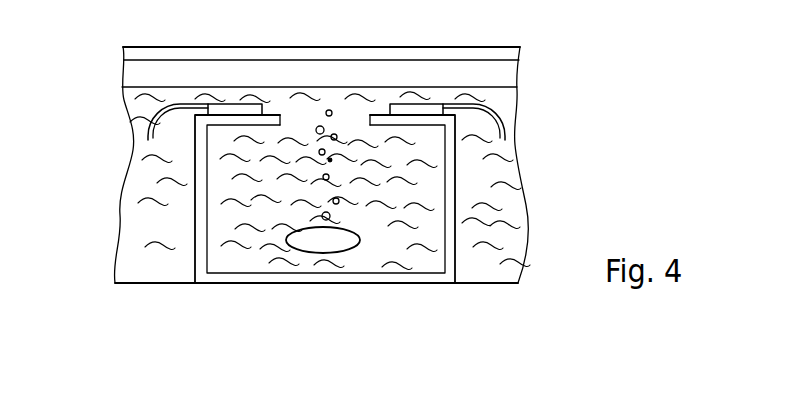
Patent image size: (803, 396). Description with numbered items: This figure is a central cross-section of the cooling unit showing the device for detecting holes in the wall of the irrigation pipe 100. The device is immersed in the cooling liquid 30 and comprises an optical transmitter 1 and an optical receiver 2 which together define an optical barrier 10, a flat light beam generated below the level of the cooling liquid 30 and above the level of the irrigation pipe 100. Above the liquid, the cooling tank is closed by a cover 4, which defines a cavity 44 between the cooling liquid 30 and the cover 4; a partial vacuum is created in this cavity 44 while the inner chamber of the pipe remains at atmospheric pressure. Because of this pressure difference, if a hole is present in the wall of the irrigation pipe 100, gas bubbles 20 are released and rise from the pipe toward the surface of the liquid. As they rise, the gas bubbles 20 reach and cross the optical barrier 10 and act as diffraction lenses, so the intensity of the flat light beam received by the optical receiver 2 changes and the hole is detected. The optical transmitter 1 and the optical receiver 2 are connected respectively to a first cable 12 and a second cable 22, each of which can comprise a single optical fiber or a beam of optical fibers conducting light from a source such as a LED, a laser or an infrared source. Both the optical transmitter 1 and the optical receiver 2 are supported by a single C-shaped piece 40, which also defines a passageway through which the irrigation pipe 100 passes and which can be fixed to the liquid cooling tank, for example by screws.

The optical transmitter 1 is at (236, 107).
The optical receiver 2 is at (420, 107).
The cover 4 is at (500, 47).
The cavity 44 is at (515, 72).
The first cable 12 is at (152, 128).
The second cable 22 is at (486, 109).
The optical barrier 10 is at (329, 105).
The gas bubbles 20 is at (329, 176).
The cooling liquid 30 is at (506, 254).
The C-shaped piece 40 is at (200, 247).
The irrigation pipe 100 is at (336, 253).